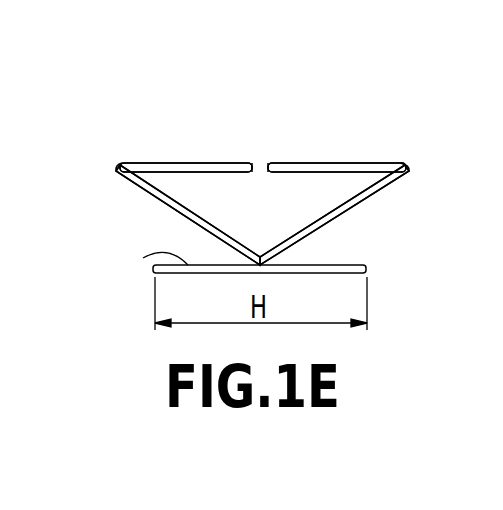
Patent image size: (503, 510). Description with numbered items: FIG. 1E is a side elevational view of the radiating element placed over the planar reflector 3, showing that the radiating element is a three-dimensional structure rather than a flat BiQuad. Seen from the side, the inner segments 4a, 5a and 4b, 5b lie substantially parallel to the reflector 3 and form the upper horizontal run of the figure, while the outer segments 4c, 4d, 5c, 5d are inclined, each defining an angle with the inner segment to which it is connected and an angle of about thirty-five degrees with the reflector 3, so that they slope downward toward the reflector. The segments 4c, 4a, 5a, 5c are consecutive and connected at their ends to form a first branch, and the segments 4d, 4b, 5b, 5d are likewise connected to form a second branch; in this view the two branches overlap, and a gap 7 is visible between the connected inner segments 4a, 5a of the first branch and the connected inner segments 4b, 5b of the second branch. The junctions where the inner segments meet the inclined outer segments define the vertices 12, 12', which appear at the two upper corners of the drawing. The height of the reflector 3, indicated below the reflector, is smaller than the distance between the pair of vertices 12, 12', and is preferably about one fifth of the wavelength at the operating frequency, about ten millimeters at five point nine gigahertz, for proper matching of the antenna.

The planar reflector 3 is at (143, 258).
The inner segment 4a is at (310, 162).
The inner segment 5a is at (337, 167).
The inner segment 4b is at (168, 162).
The inner segment 5b is at (186, 167).
The outer segment 4c is at (337, 213).
The outer segment 5c is at (334, 215).
The outer segment 4d is at (167, 208).
The outer segment 5d is at (188, 215).
The gap 7 is at (262, 165).
The vertex 12 is at (433, 132).
The vertex 12' is at (83, 110).